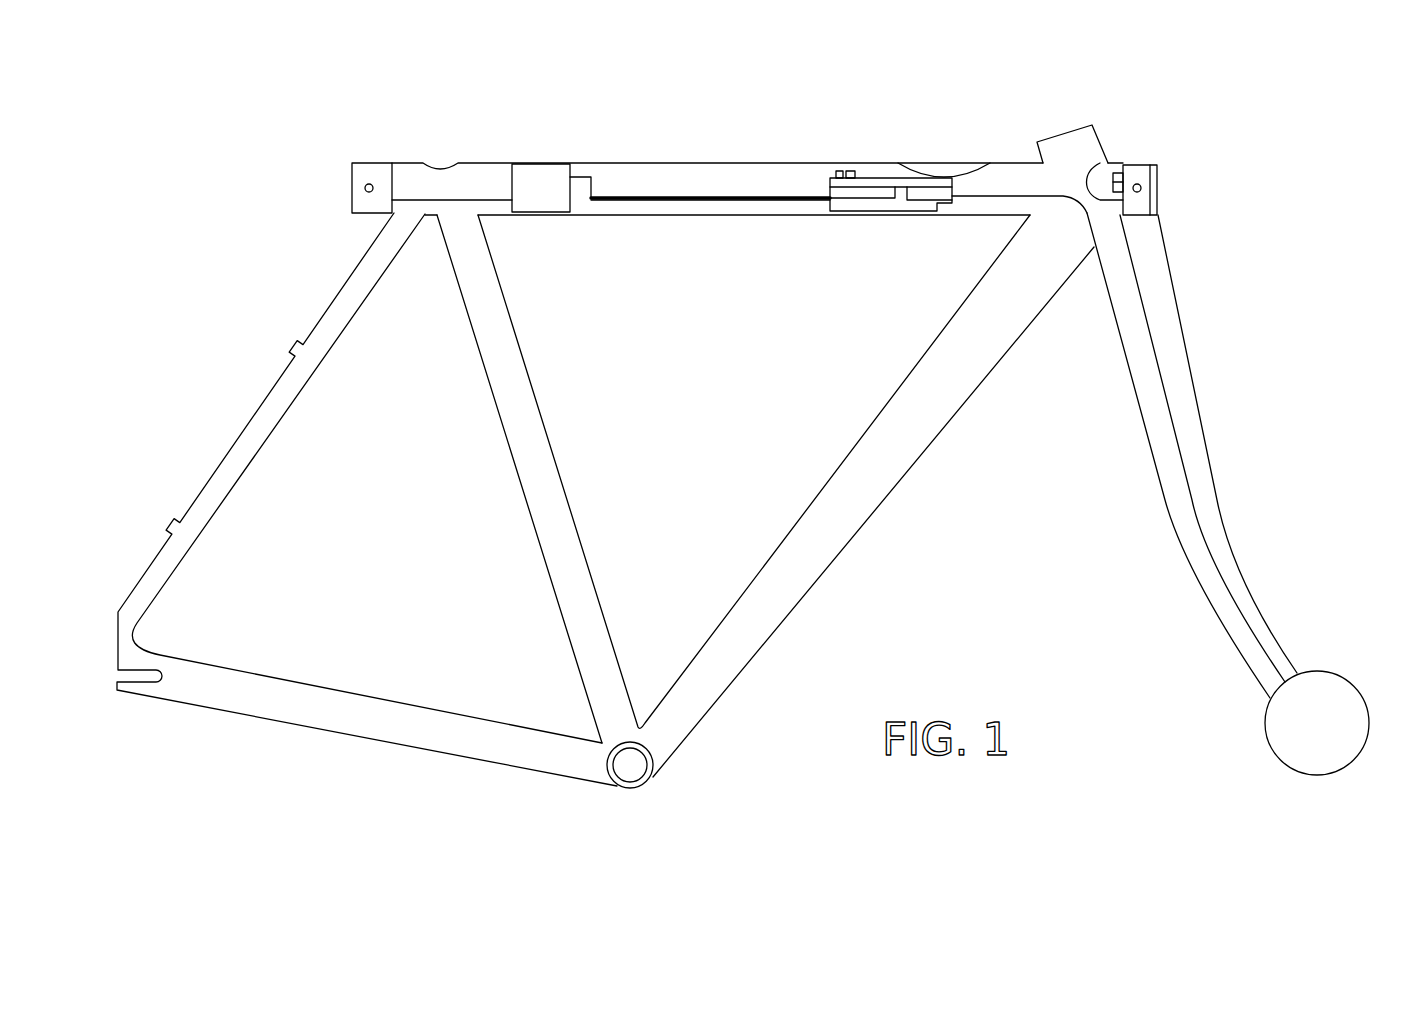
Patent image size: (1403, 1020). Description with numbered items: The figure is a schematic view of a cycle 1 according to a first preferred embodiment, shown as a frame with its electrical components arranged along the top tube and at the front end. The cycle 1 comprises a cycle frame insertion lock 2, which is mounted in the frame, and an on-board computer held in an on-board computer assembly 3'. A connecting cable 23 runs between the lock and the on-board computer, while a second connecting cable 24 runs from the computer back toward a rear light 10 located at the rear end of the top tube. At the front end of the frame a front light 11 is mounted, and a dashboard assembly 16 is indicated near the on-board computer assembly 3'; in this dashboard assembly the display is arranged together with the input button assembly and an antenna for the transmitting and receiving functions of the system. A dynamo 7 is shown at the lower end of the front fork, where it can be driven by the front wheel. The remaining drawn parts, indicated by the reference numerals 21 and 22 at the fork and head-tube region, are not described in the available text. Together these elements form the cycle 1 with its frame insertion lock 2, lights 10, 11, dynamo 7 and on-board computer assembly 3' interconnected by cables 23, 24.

The cycle 1 is at (910, 126).
The cycle frame insertion lock 2 is at (537, 178).
The on-board computer assembly 3' is at (891, 156).
The dynamo 7 is at (1320, 712).
The rear light 10 is at (357, 177).
The front light 11 is at (1135, 172).
The dashboard assembly 16 is at (954, 159).
The fork 21 is at (1165, 437).
The head tube 22 is at (1102, 160).
The connecting cable 23 is at (727, 196).
The connecting cable 24 is at (647, 202).